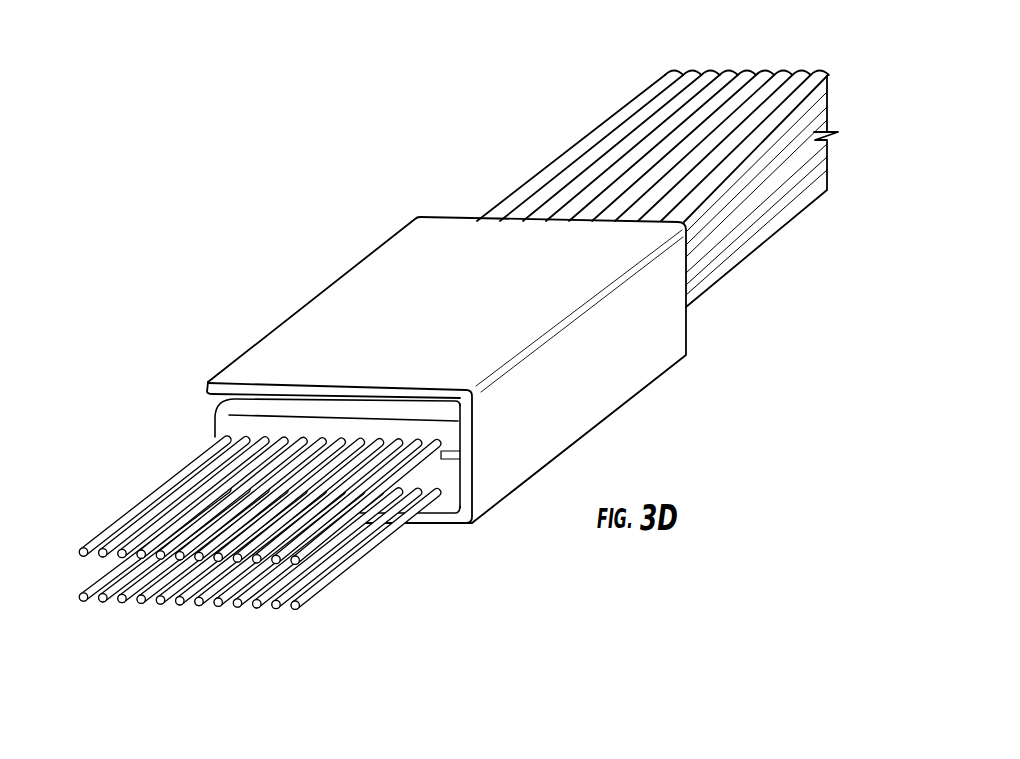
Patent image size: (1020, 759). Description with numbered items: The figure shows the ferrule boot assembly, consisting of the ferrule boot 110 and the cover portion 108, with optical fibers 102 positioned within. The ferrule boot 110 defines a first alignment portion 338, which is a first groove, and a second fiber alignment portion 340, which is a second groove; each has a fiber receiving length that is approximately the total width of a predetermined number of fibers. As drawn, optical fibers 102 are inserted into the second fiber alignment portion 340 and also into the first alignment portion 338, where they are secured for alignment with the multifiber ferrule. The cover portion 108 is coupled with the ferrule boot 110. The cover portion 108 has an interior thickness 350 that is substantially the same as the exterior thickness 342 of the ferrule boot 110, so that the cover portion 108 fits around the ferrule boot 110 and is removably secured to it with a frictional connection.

The optical fibers 102 is at (458, 156).
The cover portion 108 is at (692, 366).
The ferrule boot 110 is at (195, 401).
The first alignment portion 338 is at (448, 508).
The second fiber alignment portion 340 is at (453, 422).
The exterior thickness 342 is at (193, 485).
The interior thickness 350 is at (468, 410).